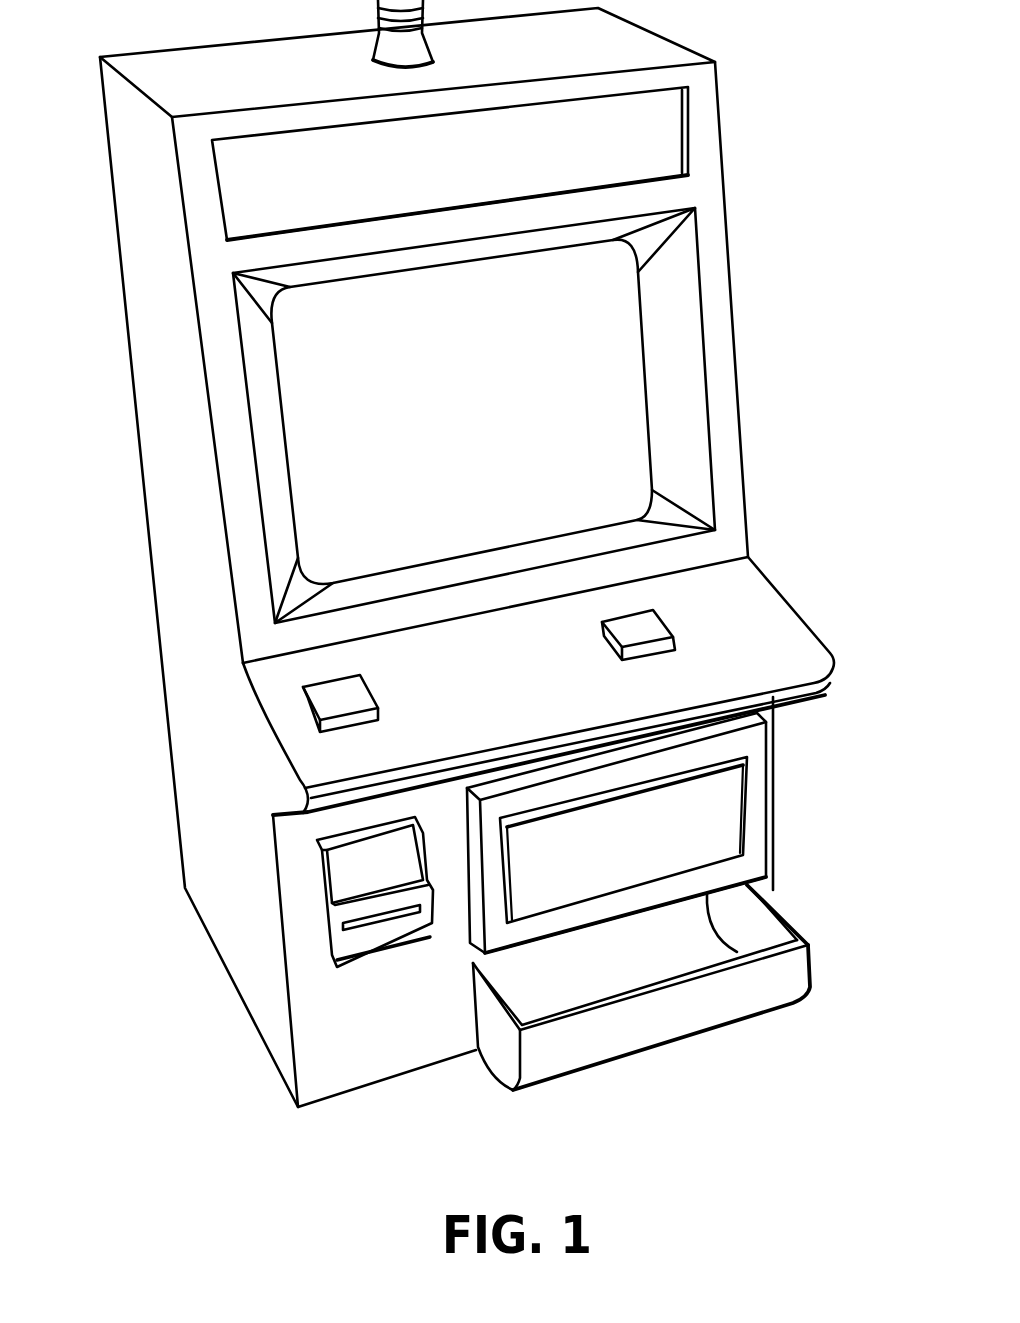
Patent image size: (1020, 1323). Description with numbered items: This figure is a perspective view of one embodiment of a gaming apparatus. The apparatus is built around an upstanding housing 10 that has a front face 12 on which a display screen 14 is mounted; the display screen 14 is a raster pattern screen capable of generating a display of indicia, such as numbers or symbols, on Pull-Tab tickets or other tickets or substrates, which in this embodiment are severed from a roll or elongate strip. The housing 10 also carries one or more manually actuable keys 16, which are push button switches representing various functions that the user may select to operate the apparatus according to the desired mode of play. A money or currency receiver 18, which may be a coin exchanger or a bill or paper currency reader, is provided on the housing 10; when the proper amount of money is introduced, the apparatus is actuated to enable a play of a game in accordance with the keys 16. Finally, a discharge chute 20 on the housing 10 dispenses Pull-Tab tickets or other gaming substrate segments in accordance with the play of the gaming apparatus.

The housing 10 is at (143, 300).
The front face 12 is at (657, 133).
The display screen 14 is at (627, 358).
The manually actuable keys 16 is at (653, 623).
The money receiver 18 is at (360, 963).
The discharge chute 20 is at (747, 932).